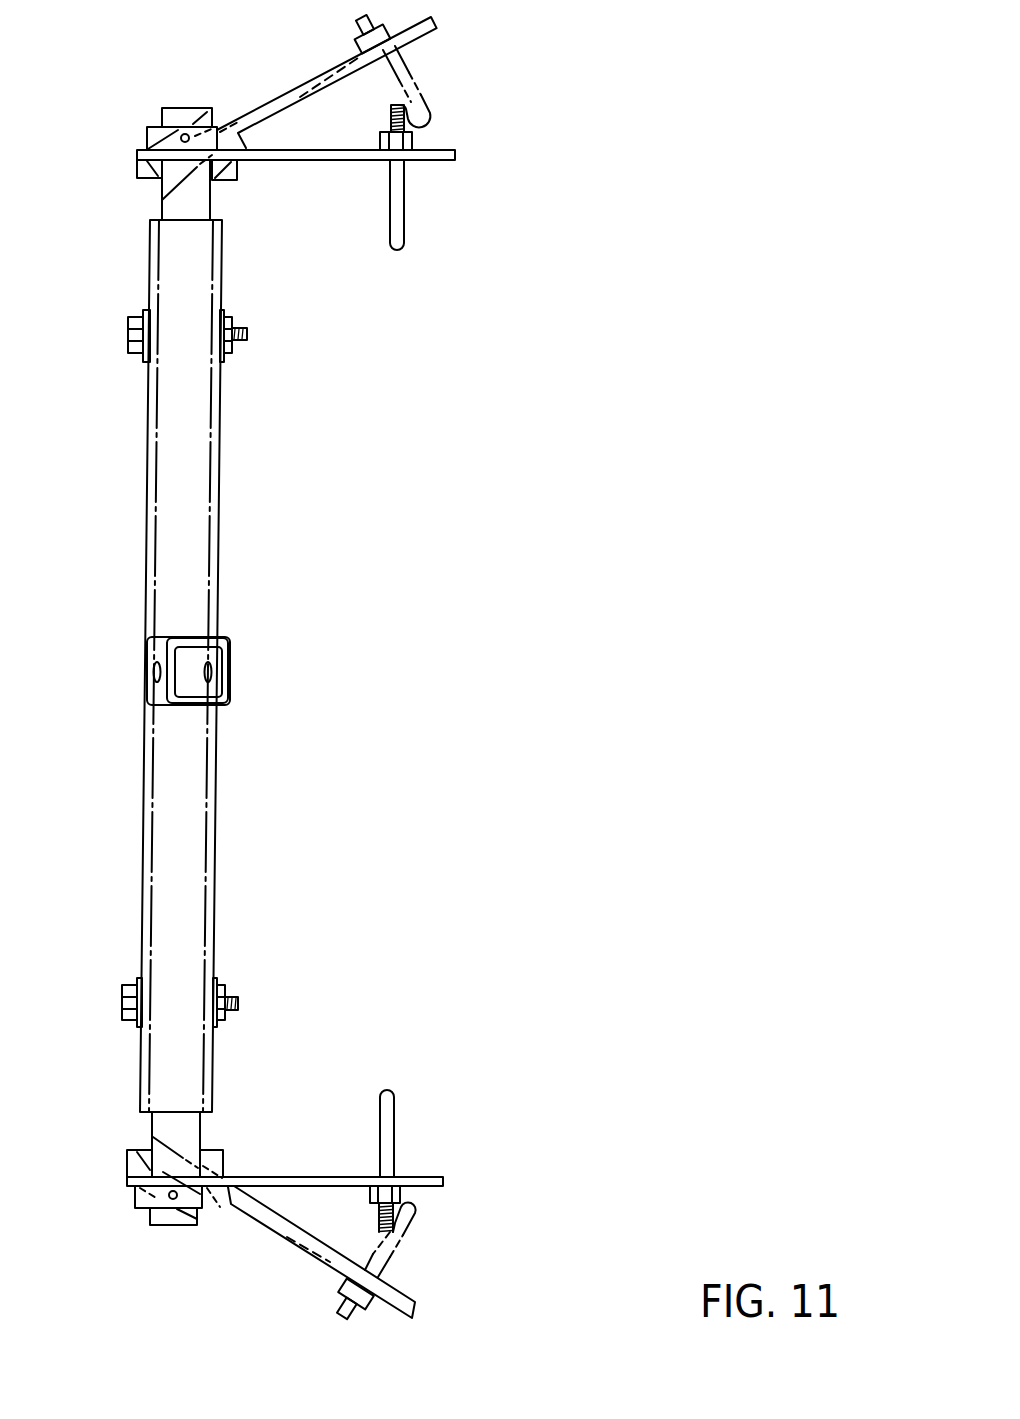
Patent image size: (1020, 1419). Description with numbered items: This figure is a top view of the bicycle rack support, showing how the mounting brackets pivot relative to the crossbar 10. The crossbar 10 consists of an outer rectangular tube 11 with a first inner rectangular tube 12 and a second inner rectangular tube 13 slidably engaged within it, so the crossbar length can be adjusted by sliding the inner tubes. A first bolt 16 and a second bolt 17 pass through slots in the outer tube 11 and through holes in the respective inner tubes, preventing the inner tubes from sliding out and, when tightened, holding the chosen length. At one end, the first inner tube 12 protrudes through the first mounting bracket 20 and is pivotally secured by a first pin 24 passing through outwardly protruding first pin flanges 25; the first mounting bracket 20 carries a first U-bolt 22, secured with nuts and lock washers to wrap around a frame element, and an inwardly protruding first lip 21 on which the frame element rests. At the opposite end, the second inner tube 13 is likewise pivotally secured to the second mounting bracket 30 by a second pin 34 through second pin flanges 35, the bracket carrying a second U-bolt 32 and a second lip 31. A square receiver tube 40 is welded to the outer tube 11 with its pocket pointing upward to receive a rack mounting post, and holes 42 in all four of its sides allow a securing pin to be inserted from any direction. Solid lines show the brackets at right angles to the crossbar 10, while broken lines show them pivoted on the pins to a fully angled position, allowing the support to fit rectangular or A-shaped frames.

The crossbar 10 is at (271, 667).
The outer rectangular tube 11 is at (200, 455).
The first inner rectangular tube 12 is at (200, 208).
The second inner rectangular tube 13 is at (183, 1132).
The first bolt 16 is at (247, 334).
The second bolt 17 is at (238, 1003).
The first mounting bracket 20 is at (365, 160).
The first lip 21 is at (140, 178).
The first U-bolt 22 is at (397, 236).
The first pin 24 is at (185, 133).
The first pin flanges 25 is at (150, 134).
The second mounting bracket 30 is at (282, 1180).
The second lip 31 is at (128, 1158).
The second U-bolt 32 is at (390, 1100).
The second pin 34 is at (170, 1198).
The second pin flanges 35 is at (140, 1198).
The square receiver tube 40 is at (222, 640).
The holes 42 is at (211, 673).